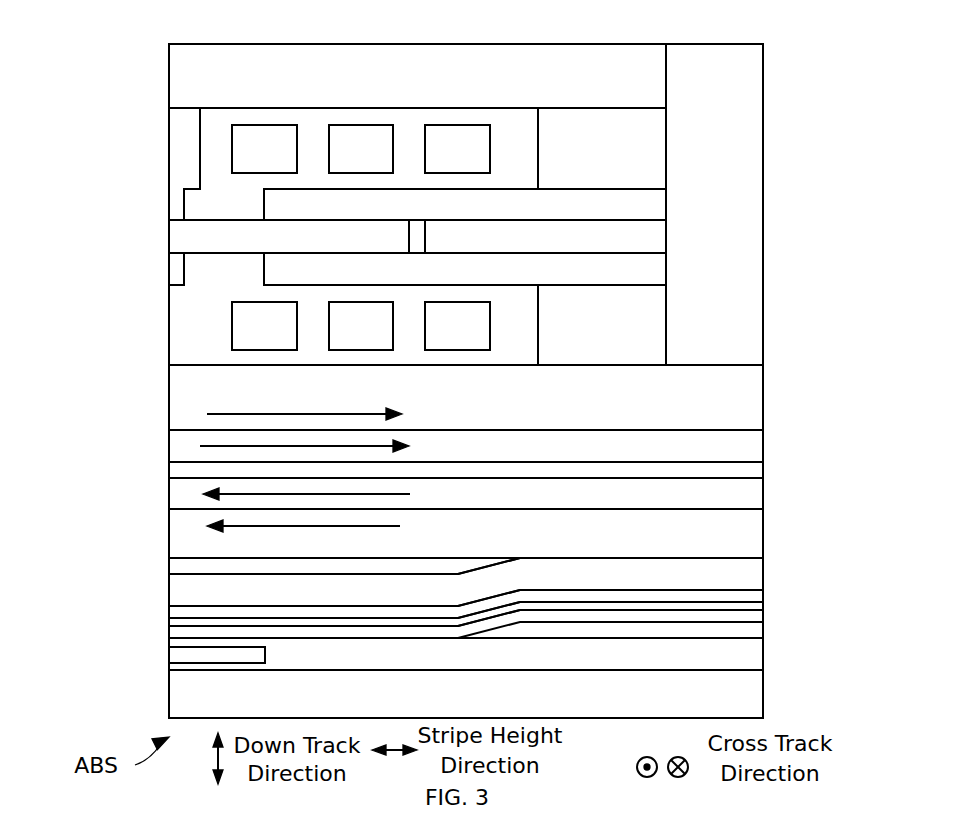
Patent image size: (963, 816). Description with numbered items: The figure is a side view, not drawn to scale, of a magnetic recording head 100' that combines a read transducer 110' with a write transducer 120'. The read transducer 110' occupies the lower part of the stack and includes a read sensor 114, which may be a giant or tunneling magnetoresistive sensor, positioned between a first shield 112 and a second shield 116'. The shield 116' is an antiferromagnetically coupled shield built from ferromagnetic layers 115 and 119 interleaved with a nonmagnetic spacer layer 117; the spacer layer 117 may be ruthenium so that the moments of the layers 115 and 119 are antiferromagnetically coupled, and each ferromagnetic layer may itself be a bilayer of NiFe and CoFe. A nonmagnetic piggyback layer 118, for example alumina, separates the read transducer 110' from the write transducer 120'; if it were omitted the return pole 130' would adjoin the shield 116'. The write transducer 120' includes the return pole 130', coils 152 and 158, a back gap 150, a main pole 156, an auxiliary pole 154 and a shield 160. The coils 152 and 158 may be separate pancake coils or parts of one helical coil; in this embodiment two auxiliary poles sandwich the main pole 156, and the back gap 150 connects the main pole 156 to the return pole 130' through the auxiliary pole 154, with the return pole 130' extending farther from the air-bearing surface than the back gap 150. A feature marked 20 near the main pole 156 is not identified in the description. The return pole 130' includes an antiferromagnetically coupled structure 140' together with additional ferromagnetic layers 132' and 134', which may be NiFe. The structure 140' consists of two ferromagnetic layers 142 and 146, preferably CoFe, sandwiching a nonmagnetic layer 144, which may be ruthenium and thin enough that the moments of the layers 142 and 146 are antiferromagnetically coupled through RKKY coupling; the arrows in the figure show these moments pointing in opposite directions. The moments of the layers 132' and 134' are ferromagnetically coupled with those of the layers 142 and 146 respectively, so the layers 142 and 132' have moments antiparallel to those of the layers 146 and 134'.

The magnetic recording head 100' is at (430, 366).
The read transducer 110' is at (405, 638).
The shield 112 is at (763, 685).
The read sensor 114 is at (169, 655).
The ferromagnetic layer 115 is at (169, 632).
The shield 116' is at (511, 591).
The nonmagnetic spacer layer 117 is at (763, 607).
The nonmagnetic piggyback layer 118 is at (169, 590).
The ferromagnetic layer 119 is at (169, 615).
The write transducer 120' is at (405, 206).
The write head region 20 is at (100, 237).
The return pole 130' is at (518, 437).
The ferromagnetic layer 132' is at (494, 527).
The ferromagnetic layer 134' is at (438, 382).
The antiferromagnetically coupled structure 140' is at (405, 469).
The ferromagnetic layer 142 is at (169, 495).
The nonmagnetic layer 144 is at (763, 470).
The ferromagnetic layer 146 is at (169, 445).
The back gap 150 is at (666, 340).
The coil 152 is at (201, 333).
The auxiliary pole 154 is at (666, 268).
The main pole 156 is at (169, 237).
The coil 158 is at (206, 150).
The shield 160 is at (666, 93).